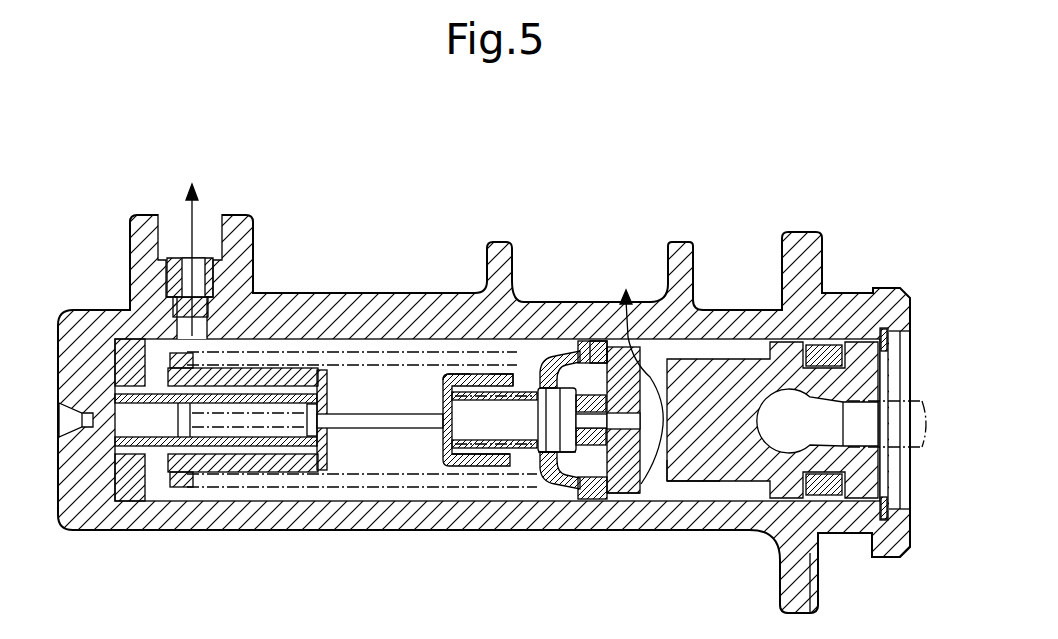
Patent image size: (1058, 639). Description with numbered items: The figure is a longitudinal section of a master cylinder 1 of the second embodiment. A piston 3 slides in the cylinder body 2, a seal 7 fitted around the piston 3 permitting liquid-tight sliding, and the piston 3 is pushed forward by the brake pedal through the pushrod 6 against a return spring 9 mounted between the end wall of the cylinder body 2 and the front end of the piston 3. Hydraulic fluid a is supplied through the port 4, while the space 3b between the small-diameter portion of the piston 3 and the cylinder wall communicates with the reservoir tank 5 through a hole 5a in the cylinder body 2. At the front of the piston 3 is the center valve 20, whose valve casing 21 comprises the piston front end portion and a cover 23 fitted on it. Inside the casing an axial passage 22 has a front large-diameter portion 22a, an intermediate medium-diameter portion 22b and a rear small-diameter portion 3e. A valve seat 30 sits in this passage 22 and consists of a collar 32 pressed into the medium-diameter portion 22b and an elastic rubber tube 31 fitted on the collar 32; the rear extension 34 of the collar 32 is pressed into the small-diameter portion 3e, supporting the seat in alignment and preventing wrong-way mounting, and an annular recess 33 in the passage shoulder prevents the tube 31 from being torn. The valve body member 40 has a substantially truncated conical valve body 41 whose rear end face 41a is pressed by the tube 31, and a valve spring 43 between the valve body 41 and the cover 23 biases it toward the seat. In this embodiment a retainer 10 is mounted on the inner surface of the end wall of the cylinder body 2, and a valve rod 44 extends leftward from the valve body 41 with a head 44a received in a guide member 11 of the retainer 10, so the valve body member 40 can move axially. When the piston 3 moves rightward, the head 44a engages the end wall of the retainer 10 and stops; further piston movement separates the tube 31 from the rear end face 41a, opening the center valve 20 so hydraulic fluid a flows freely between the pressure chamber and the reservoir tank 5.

The master cylinder 1 is at (820, 233).
The cylinder body 2 is at (279, 323).
The piston 3 is at (787, 363).
The space 3b is at (750, 495).
The rear small-diameter portion 3e is at (692, 474).
The port 4 is at (178, 243).
The reservoir tank 5 is at (600, 198).
The hole 5a is at (631, 296).
The pushrod 6 is at (896, 413).
The seal 7 is at (603, 355).
The return spring 9 is at (372, 482).
The retainer 10 is at (214, 466).
The guide member 11 is at (130, 442).
The center valve 20 is at (482, 426).
The valve casing 21 is at (513, 370).
The passage 22 is at (522, 391).
The front large-diameter portion 22a is at (475, 450).
The intermediate medium-diameter portion 22b is at (584, 448).
The cover 23 is at (462, 376).
The valve seat 30 is at (572, 350).
The elastic tube 31 is at (612, 500).
The collar 32 is at (600, 462).
The annular recess 33 is at (664, 378).
The rear extension 34 is at (663, 466).
The valve body member 40 is at (543, 454).
The valve body 41 is at (544, 394).
The rear end face 41a is at (546, 472).
The valve spring 43 is at (503, 448).
The valve rod 44 is at (278, 419).
The head 44a is at (306, 396).
The hydraulic fluid a is at (735, 300).